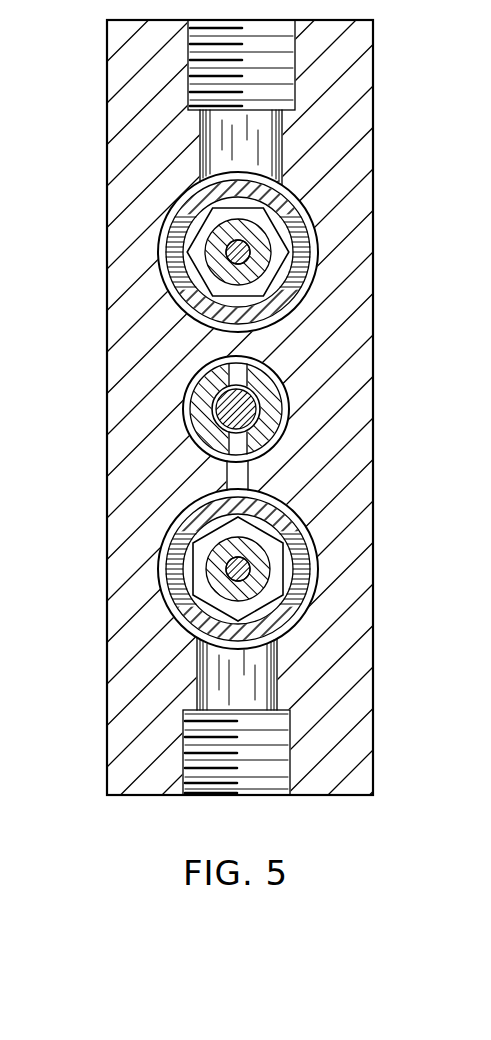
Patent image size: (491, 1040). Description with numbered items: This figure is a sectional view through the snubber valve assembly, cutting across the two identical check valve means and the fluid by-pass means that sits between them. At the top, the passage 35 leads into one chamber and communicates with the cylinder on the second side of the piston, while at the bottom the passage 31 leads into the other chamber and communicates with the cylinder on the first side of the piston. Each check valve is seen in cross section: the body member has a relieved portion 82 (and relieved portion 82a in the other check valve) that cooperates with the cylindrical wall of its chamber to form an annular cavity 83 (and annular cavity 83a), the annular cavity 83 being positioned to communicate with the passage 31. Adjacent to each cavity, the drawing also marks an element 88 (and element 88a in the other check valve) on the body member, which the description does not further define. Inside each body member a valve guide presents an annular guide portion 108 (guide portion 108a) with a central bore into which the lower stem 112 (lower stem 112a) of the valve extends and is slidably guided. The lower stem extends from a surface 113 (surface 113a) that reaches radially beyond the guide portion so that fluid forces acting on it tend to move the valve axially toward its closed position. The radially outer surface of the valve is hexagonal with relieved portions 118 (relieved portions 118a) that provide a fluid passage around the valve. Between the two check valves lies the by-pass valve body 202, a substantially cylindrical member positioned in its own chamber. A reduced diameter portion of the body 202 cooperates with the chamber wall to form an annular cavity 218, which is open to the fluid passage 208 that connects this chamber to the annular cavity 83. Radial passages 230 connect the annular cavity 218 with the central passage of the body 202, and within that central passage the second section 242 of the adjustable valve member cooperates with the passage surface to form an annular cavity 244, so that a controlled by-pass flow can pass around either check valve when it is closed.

The passage 31 is at (213, 677).
The passage 35 is at (222, 147).
The relieved portion 82 is at (173, 622).
The relieved portion 82a is at (178, 312).
The annular cavity 83 is at (315, 570).
The annular cavity 83a is at (293, 203).
The lower threaded sleeve 88 is at (303, 548).
The upper threaded sleeve 88a is at (300, 262).
The guide portion 108 is at (220, 571).
The guide portion 108a is at (217, 258).
The lower stem 112 is at (233, 560).
The lower stem 112a is at (215, 250).
The surface 113 is at (273, 590).
The surface 113a is at (283, 250).
The relieved portions 118 is at (193, 605).
The relieved portions 118a is at (200, 290).
The by-pass valve body 202 is at (208, 412).
The fluid passage 208 is at (242, 475).
The annular cavity 218 is at (192, 432).
The radial passages 230 is at (235, 357).
The second section 242 is at (228, 373).
The annular cavity 244 is at (213, 393).